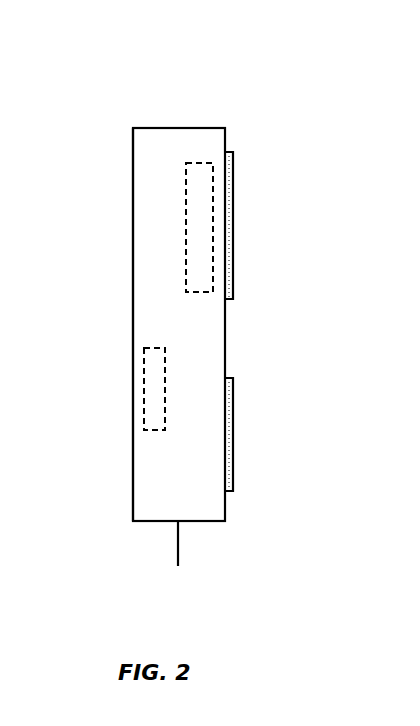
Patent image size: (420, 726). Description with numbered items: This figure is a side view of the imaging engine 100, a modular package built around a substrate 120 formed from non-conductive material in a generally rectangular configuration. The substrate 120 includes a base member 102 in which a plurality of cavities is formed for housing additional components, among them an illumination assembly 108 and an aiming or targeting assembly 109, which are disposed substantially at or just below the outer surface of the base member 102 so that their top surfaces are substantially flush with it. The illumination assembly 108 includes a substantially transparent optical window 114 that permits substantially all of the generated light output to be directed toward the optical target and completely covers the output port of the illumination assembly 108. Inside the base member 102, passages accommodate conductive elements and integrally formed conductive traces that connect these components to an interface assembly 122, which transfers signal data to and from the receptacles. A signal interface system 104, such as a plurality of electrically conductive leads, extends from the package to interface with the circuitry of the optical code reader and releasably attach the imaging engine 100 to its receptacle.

The imaging engine 100 is at (141, 88).
The base member 102 is at (152, 208).
The signal interface system 104 is at (178, 547).
The illumination assembly 108 is at (198, 207).
The aiming or targeting assembly 109 is at (229, 422).
The optical window 114 is at (227, 232).
The substrate 120 is at (238, 136).
The interface assembly 122 is at (153, 388).